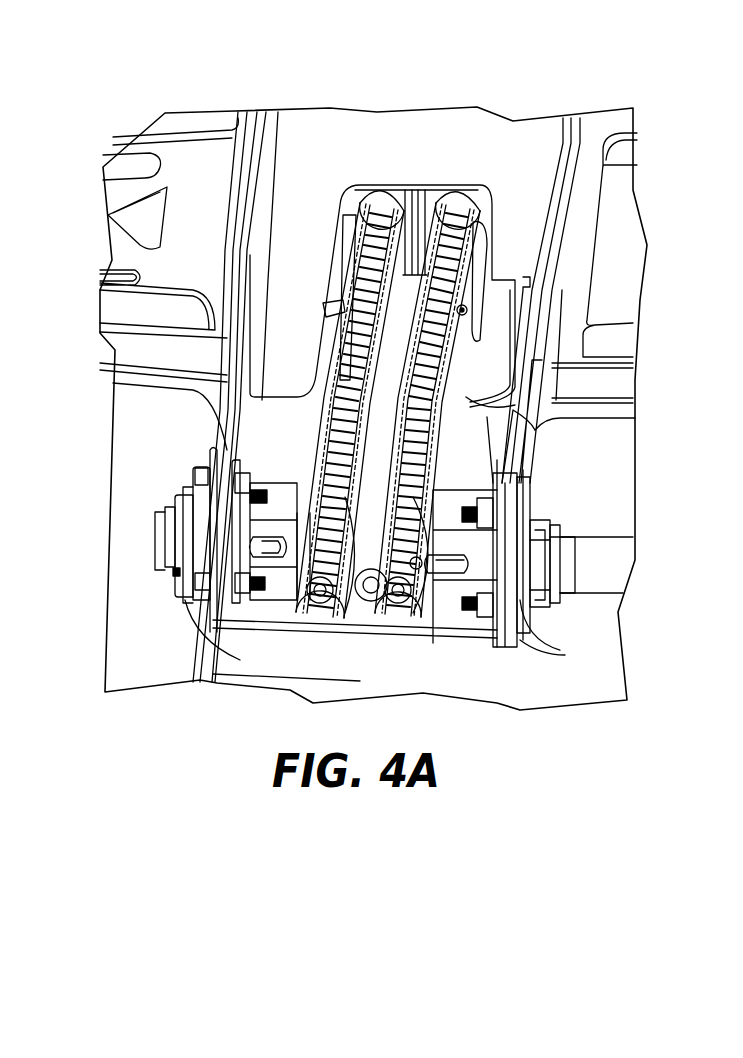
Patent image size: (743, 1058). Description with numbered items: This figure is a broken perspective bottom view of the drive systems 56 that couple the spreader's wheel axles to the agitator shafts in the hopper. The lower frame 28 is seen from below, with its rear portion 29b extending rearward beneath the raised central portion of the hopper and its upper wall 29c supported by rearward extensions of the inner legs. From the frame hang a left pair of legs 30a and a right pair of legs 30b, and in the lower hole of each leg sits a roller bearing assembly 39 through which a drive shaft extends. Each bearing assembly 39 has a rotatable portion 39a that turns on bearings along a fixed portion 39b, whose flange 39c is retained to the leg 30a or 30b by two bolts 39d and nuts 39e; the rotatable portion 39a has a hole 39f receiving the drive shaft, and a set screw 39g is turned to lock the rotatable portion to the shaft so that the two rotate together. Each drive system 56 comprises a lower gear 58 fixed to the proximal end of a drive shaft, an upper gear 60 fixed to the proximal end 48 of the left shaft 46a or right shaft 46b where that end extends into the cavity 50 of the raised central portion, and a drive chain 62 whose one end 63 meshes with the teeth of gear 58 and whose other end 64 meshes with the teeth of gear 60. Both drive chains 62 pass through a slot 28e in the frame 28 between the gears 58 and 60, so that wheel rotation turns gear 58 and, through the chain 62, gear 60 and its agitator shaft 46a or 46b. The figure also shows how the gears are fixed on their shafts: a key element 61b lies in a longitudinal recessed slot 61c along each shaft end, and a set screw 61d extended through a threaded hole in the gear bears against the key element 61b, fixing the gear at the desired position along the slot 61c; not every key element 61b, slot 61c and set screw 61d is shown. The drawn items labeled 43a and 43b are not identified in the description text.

The lower frame 28 is at (620, 408).
The slot 28e is at (380, 184).
The rear portion 29b is at (512, 122).
The upper wall 29c is at (392, 120).
The left legs 30a is at (227, 423).
The right legs 30b is at (523, 463).
The roller bearing assembly 39 is at (207, 457).
The rotatable portion 39a is at (190, 552).
The fixed portion 39b is at (190, 553).
The flange 39c is at (210, 600).
The bolts 39d is at (195, 482).
The nuts 39e is at (242, 483).
The hole 39f is at (165, 523).
The set screw 39g is at (177, 573).
The axle 43a is at (178, 505).
The axle 43b is at (593, 537).
The left shaft 46a is at (330, 286).
The right shaft 46b is at (480, 273).
The proximal end 48 is at (337, 272).
The cavity 50 is at (473, 390).
The drive systems 56 is at (330, 373).
The lower gear 58 is at (318, 490).
The upper gear 60 is at (360, 220).
The key element 61b is at (433, 633).
The longitudinal recessed slot 61c is at (438, 565).
The set screw 61d is at (480, 301).
The drive chain 62 is at (403, 400).
The chain end 63 is at (390, 600).
The chain end 64 is at (467, 192).